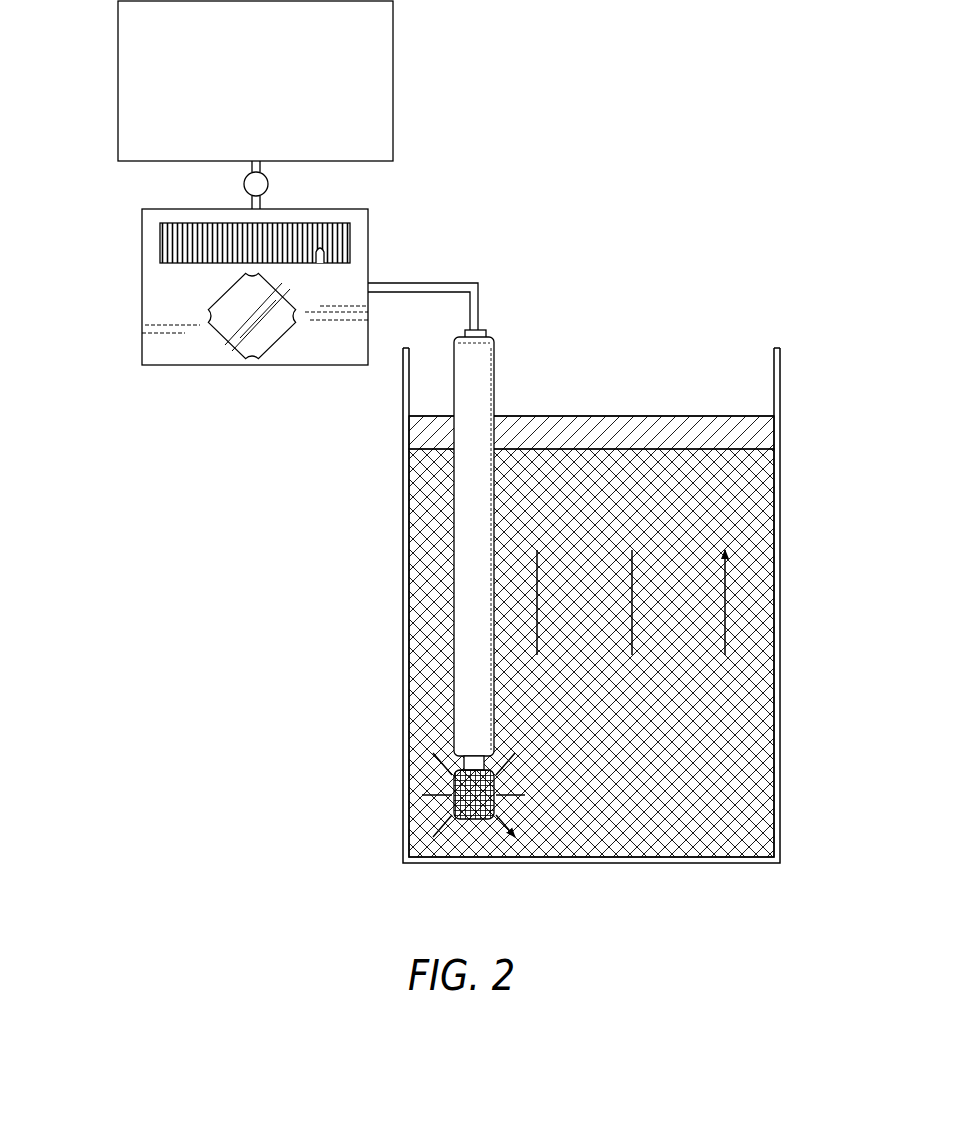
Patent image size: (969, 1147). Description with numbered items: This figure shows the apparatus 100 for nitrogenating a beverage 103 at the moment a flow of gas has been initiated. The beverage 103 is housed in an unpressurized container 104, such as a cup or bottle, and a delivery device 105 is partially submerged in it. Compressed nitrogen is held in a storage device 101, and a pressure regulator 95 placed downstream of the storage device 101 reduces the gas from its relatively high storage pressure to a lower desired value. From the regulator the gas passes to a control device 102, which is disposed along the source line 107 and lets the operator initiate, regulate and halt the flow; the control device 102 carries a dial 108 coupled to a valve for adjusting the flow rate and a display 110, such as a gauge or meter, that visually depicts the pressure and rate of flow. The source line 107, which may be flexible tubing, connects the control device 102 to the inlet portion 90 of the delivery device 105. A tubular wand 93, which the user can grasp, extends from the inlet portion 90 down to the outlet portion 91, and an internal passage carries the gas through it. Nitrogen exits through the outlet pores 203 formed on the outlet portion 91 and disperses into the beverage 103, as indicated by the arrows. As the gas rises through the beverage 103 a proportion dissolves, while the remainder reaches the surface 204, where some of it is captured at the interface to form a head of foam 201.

The apparatus 100 is at (612, 95).
The storage device 101 is at (118, 80).
The pressure regulator 95 is at (268, 186).
The control device 102 is at (142, 288).
The display 110 is at (160, 242).
The dial 108 is at (262, 345).
The source line 107 is at (430, 283).
The inlet portion 90 is at (447, 563).
The tubular wand 93 is at (454, 395).
The outlet portion 91 is at (445, 783).
The outlet pores 203 is at (455, 810).
The delivery device 105 is at (445, 523).
The beverage 103 is at (750, 745).
The container 104 is at (776, 530).
The head of foam 201 is at (590, 414).
The surface 204 is at (776, 446).